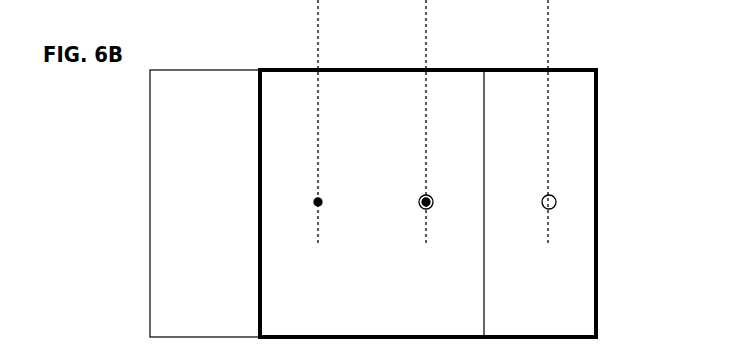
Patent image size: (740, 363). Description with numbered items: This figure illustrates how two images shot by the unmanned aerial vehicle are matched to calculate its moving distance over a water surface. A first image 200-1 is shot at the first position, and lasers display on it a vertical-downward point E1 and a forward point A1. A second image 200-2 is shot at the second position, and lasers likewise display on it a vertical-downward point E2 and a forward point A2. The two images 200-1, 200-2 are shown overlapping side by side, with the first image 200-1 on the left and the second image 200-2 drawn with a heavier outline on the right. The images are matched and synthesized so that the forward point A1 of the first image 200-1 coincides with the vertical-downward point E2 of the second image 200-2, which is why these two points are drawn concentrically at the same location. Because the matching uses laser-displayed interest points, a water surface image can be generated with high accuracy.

The first image 200-1 is at (192, 70).
The second image 200-2 is at (582, 70).
The vertical-downward point E1 is at (303, 203).
The vertical-downward point E2 is at (442, 203).
The forward point A1 is at (412, 203).
The forward point A2 is at (563, 203).